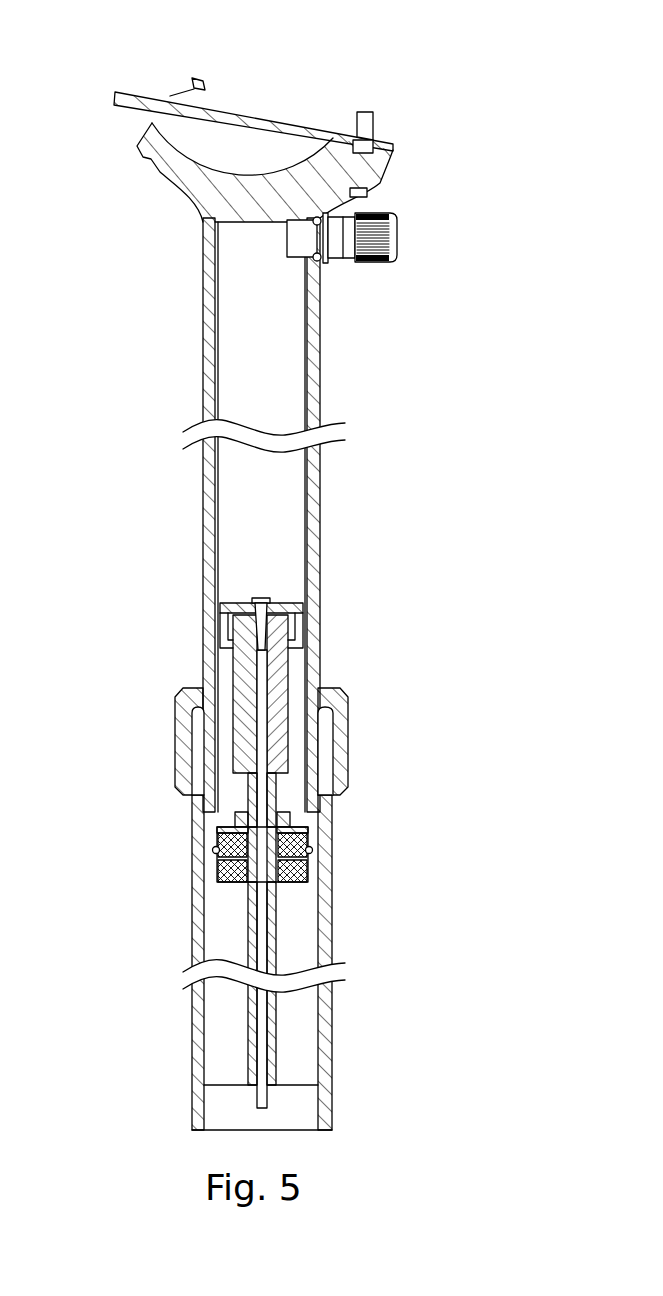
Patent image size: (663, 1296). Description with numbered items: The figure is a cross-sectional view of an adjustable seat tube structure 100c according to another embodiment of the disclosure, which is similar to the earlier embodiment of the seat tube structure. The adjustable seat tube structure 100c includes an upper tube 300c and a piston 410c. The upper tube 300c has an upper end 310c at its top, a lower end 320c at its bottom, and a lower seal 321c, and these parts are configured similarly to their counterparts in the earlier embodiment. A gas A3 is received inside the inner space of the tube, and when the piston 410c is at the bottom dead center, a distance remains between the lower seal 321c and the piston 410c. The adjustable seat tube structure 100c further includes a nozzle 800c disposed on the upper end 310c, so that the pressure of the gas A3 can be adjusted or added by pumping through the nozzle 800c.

The adjustable seat tube structure 100c is at (90, 28).
The upper end 310c is at (235, 199).
The upper tube 300c is at (205, 285).
The nozzle 800c is at (393, 236).
The gas A3 is at (298, 343).
The piston 410c is at (290, 603).
The lower end 320c is at (295, 885).
The lower seal 321c is at (216, 851).